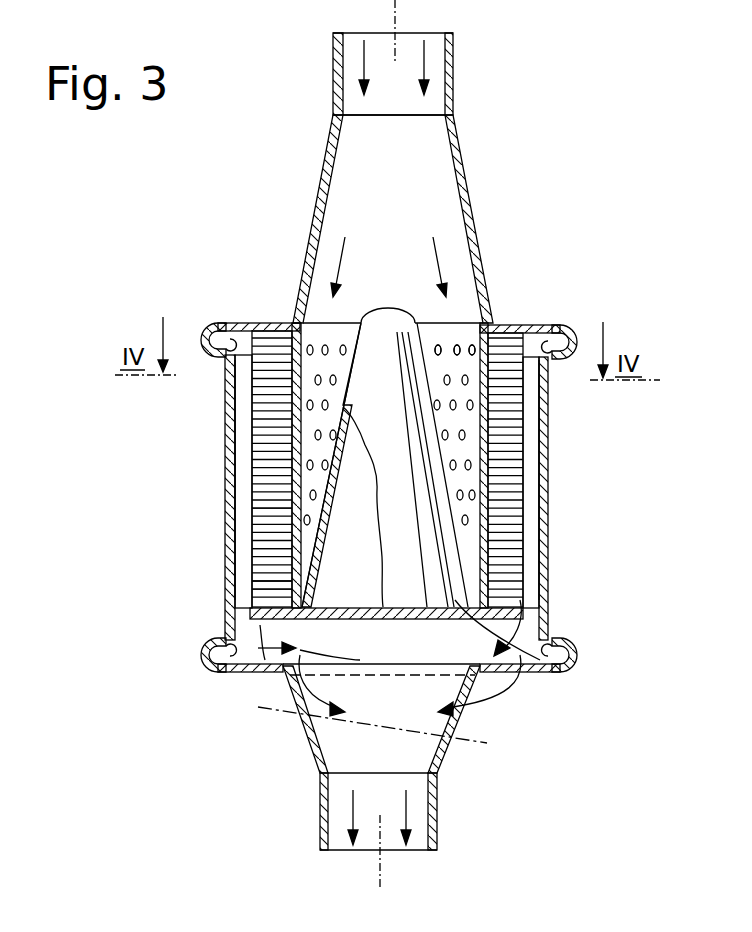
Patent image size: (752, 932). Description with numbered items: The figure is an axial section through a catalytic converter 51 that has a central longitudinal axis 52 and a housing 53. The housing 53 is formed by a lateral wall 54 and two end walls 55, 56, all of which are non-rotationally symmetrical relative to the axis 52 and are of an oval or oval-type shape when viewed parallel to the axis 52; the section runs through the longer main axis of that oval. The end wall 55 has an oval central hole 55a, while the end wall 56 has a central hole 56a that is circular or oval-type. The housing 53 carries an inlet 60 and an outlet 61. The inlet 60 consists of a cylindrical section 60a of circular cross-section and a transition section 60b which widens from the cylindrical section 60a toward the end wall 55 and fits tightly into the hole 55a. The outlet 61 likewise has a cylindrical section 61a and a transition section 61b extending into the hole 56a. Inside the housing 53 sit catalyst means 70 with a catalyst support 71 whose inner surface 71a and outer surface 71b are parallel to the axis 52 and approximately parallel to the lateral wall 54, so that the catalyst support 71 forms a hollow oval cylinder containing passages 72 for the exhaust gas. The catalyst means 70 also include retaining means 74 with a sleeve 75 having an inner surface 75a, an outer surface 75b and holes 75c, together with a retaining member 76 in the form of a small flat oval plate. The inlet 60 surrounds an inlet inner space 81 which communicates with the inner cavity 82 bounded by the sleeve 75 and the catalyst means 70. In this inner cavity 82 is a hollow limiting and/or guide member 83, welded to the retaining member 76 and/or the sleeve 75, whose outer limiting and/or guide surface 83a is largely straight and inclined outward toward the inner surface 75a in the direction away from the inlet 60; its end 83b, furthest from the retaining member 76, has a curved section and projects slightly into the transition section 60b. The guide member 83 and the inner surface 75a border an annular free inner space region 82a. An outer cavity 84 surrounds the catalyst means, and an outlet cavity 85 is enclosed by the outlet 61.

The catalytic converter 51 is at (213, 318).
The longitudinal axis 52 is at (400, 6).
The housing 53 is at (247, 317).
The lateral wall 54 is at (228, 416).
The end wall 55 is at (270, 322).
The central hole 55a is at (294, 303).
The end wall 56 is at (246, 675).
The central hole 56a is at (272, 695).
The inlet 60 is at (371, 162).
The cylindrical section 60a is at (333, 76).
The transition section 60b is at (321, 215).
The outlet 61 is at (362, 755).
The cylindrical section 61a is at (320, 836).
The transition section 61b is at (308, 744).
The catalyst means 70 is at (322, 471).
The catalyst support 71 is at (250, 478).
The inner surface 71a is at (252, 512).
The outer surface 71b is at (252, 548).
The passages 72 is at (258, 590).
The retaining means 74 is at (276, 622).
The sleeve 75 is at (511, 410).
The inner surface 75a is at (485, 455).
The outer surface 75b is at (487, 479).
The holes 75c is at (475, 346).
The retaining member 76 is at (545, 685).
The inlet inner space 81 is at (450, 160).
The inner cavity 82 is at (485, 418).
The free inner space region 82a is at (486, 493).
The limiting and/or guide member 83 is at (511, 465).
The limiting and/or guide surface 83a is at (487, 520).
The end 83b is at (386, 308).
The outer cavity 84 is at (549, 577).
The outlet cavity 85 is at (430, 750).